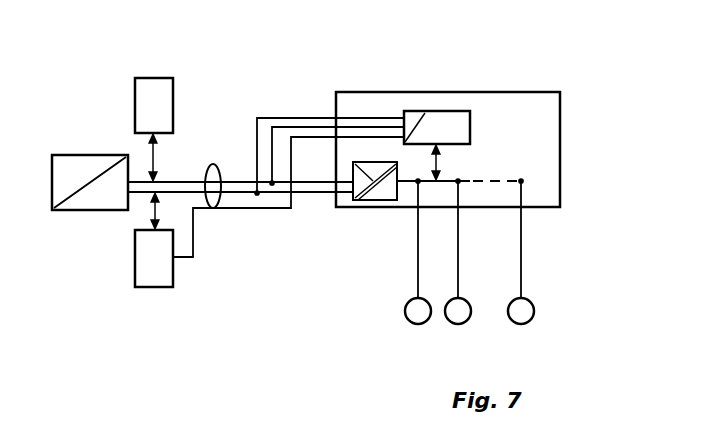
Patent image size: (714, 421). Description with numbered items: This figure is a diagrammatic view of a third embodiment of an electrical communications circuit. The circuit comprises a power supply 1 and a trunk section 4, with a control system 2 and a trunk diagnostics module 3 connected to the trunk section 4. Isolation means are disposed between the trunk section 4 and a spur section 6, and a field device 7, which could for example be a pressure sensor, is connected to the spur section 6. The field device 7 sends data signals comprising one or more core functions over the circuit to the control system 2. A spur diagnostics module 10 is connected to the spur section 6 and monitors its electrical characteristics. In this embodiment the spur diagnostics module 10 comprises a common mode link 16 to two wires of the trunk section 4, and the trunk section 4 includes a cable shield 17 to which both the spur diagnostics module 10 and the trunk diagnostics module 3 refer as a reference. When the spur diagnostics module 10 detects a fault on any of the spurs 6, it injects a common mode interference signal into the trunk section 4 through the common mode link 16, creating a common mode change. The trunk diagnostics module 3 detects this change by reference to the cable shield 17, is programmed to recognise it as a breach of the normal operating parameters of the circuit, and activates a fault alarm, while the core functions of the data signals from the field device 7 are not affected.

The power supply 1 is at (102, 195).
The control system 2 is at (135, 92).
The trunk diagnostics module 3 is at (148, 270).
The trunk section 4 is at (146, 180).
The spur section 6 is at (418, 230).
The field device 7 is at (418, 315).
The spur diagnostics module 10 is at (440, 117).
The common mode link 16 is at (279, 127).
The cable shield 17 is at (212, 207).